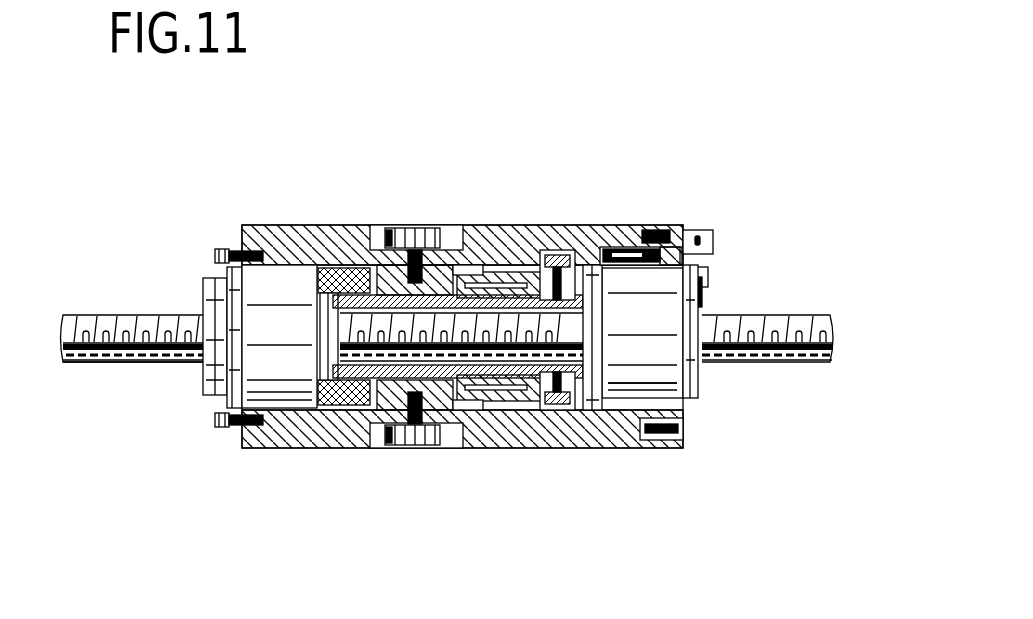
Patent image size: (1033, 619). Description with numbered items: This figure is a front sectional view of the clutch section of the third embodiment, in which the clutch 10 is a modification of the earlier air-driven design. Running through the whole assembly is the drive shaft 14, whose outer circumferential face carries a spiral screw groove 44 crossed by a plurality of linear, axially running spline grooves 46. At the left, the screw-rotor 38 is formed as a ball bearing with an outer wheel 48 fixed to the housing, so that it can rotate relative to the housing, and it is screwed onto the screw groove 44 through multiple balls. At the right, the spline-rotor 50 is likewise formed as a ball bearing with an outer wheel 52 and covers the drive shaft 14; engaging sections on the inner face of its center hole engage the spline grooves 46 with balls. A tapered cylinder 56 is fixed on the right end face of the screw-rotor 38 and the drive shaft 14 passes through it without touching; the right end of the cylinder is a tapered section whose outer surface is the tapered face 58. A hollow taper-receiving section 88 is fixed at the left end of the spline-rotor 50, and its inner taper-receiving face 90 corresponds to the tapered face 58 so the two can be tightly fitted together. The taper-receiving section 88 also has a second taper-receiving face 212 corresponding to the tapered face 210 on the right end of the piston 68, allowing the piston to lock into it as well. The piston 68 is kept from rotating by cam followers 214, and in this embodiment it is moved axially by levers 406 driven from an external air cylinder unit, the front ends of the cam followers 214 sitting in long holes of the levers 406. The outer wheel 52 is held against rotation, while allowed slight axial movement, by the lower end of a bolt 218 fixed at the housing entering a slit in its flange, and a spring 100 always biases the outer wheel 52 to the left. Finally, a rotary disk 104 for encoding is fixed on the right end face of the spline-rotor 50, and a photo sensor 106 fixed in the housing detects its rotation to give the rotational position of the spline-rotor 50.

The clutch 10 is at (308, 215).
The drive shaft 14 is at (826, 300).
The screw-rotor 38 is at (207, 373).
The screw groove 44 is at (120, 318).
The spline grooves 46 is at (75, 364).
The outer wheel 48 is at (268, 280).
The spline-rotor 50 is at (565, 330).
The outer wheel 52 is at (690, 400).
The tapered cylinder 56 is at (330, 400).
The tapered face 58 is at (573, 225).
The piston 68 is at (378, 377).
The taper-receiving section 88 is at (547, 227).
The taper-receiving face 90 is at (523, 448).
The spring 100 is at (627, 448).
The rotary disk 104 is at (667, 382).
The photo sensor 106 is at (713, 233).
The tapered face 210 is at (487, 227).
The taper-receiving face 212 is at (473, 448).
The cam followers 214 is at (421, 225).
The bolt 218 is at (600, 228).
The levers 406 is at (388, 232).